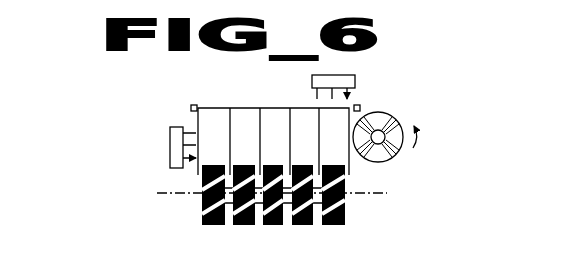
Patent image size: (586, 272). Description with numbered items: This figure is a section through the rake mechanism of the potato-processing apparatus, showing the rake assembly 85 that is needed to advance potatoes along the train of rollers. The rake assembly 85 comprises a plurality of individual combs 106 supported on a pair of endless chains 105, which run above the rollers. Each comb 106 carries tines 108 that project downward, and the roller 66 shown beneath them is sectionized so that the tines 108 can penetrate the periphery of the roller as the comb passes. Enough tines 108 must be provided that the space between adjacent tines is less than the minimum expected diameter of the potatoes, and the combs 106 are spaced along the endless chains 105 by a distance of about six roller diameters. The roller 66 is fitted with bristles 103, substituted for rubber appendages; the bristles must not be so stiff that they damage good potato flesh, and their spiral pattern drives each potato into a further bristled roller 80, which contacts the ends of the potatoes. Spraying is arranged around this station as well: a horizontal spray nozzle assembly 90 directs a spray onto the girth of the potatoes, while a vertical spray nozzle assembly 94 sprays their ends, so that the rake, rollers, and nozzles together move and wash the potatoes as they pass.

The roller 66 is at (267, 226).
The bristled roller 80 is at (395, 113).
The rake assembly 85 is at (222, 106).
The horizontal spray nozzle assembly 90 is at (355, 76).
The vertical spray nozzle assembly 94 is at (170, 143).
The bristles 103 is at (252, 223).
The endless chain 105 is at (190, 108).
The comb 106 is at (268, 108).
The tine 108 is at (198, 171).